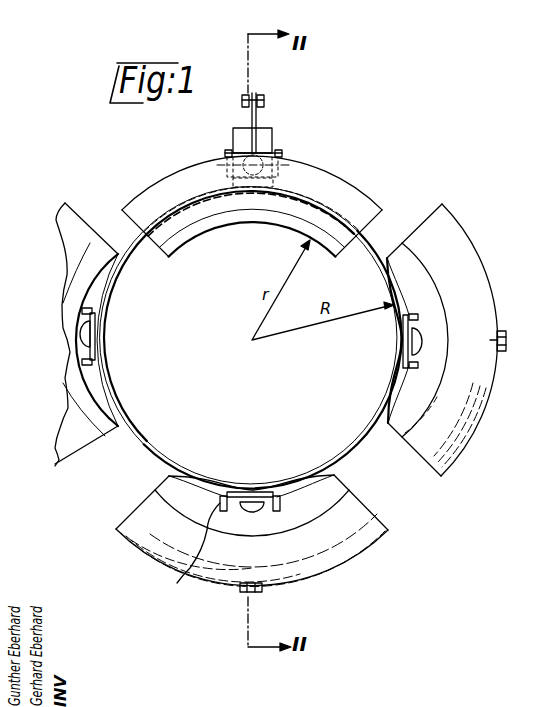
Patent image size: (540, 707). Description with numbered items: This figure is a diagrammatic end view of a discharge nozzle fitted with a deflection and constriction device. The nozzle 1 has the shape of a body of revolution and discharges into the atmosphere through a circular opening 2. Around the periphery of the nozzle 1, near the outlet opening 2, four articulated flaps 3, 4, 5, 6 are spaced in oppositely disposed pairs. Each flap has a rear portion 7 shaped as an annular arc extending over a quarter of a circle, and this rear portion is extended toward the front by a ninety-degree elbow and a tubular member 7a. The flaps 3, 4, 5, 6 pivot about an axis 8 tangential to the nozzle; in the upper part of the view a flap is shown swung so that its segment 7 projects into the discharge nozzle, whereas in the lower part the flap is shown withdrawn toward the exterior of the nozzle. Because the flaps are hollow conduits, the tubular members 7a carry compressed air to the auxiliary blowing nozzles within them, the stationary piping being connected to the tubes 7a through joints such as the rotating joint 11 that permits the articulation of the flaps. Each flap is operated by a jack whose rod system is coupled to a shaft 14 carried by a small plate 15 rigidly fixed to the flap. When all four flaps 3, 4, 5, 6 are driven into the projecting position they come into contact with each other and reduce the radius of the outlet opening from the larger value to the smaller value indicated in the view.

The nozzle 1 is at (117, 392).
The circular opening 2 is at (365, 445).
The articulated flap 3 is at (333, 178).
The articulated flap 4 is at (333, 560).
The articulated flap 5 is at (57, 452).
The articulated flap 6 is at (447, 457).
The rear portion 7 is at (342, 522).
The tubular member 7a is at (258, 492).
The axis 8 is at (285, 160).
The rotating joint 11 is at (191, 557).
The shaft 14 is at (265, 100).
The small plate 15 is at (252, 118).